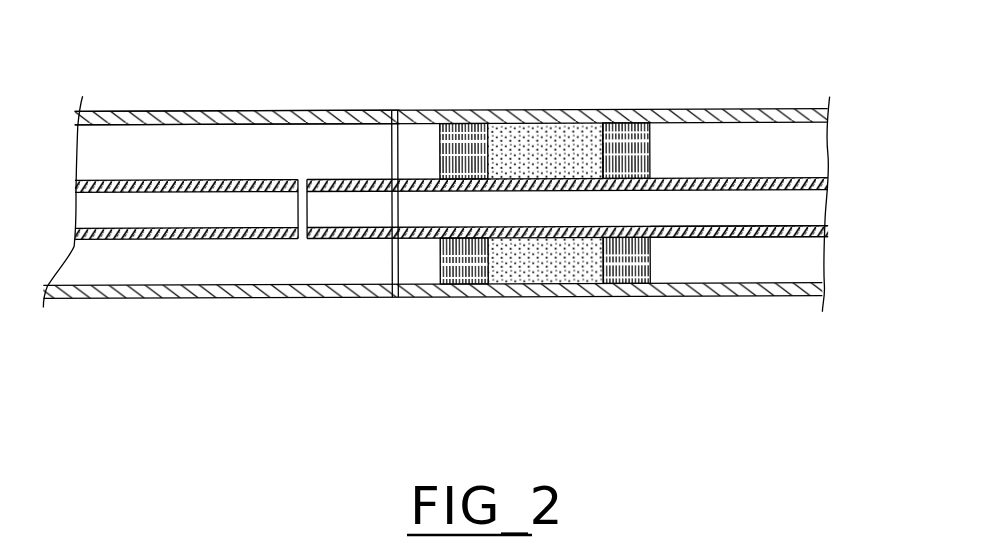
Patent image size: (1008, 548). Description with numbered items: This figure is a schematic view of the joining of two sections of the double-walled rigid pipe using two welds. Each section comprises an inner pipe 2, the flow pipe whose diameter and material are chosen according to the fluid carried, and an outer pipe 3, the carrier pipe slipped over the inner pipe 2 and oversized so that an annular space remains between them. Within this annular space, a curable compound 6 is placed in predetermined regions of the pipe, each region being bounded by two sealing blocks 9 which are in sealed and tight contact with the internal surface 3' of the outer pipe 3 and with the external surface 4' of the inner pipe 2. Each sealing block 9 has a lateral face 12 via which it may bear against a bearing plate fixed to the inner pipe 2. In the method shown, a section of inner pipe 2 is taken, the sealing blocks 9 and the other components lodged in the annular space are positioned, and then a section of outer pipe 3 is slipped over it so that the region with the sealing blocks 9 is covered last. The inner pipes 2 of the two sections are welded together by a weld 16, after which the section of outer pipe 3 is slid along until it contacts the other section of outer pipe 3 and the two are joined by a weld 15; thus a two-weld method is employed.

The inner pipe 2 is at (713, 238).
The outer pipe 3 is at (450, 71).
The internal surface 3' is at (236, 69).
The inner wall 4' is at (452, 271).
The curable compound 6 is at (540, 123).
The sealing block 9 is at (460, 123).
The lateral face 12 is at (590, 130).
The weld 15 is at (393, 112).
The weld 16 is at (303, 240).